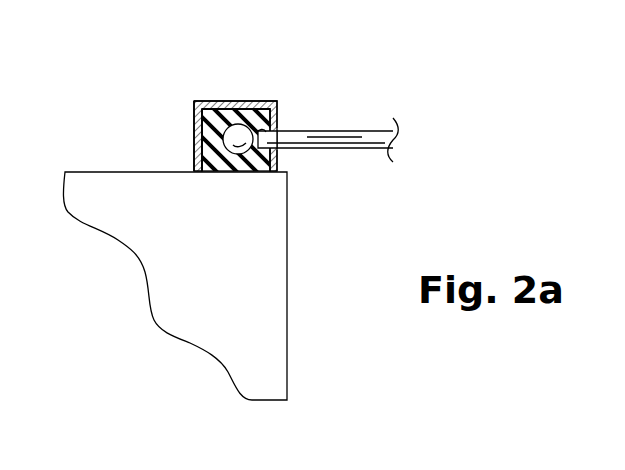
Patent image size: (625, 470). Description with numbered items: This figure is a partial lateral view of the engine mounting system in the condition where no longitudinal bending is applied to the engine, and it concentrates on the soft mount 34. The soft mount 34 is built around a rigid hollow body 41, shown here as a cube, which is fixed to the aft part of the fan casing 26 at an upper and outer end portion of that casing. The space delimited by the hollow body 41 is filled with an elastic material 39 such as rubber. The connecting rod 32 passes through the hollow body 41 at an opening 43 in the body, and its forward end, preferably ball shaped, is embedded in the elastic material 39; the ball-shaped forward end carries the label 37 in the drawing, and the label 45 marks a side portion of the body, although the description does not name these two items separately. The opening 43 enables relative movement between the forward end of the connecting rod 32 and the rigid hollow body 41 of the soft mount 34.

The fan casing 26 is at (90, 170).
The soft mount 34 is at (206, 90).
The elastic material 39 is at (258, 100).
The rigid hollow body 41 is at (235, 98).
The side wall 45 is at (194, 152).
The ball 37 is at (228, 153).
The opening 43 is at (281, 131).
The connecting rod 32 is at (352, 151).